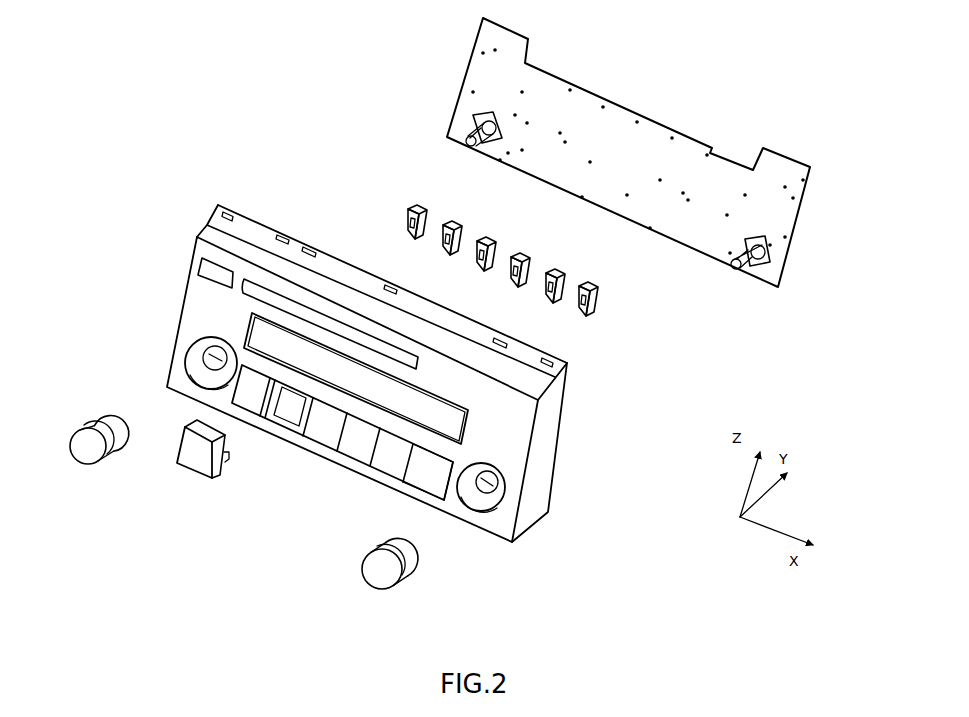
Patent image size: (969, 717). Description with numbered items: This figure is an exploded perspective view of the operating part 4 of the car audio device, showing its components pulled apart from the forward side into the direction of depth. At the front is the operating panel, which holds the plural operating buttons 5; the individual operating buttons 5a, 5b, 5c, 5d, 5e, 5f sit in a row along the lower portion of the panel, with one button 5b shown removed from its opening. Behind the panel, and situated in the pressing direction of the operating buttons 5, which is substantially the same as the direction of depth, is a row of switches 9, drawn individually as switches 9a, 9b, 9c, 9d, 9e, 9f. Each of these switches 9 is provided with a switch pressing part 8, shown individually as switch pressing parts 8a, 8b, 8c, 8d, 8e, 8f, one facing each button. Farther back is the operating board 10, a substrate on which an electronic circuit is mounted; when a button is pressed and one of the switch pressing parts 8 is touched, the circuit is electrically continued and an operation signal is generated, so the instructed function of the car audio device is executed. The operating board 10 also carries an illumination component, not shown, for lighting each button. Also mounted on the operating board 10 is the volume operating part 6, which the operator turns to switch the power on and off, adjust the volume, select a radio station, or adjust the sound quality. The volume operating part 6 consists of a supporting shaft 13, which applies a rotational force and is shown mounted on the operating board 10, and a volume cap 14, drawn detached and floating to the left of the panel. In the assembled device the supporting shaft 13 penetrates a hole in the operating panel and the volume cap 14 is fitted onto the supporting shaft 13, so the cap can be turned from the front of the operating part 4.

The operating part 4 is at (560, 585).
The operating buttons 5 is at (343, 572).
The operating button 5a is at (245, 414).
The operating button 5b is at (203, 473).
The operating button 5c is at (323, 428).
The operating button 5d is at (362, 448).
The operating button 5e is at (390, 467).
The operating button 5f is at (420, 478).
The volume operating part 6 is at (125, 323).
The switch pressing parts 8 is at (563, 347).
The switch pressing part 8a is at (408, 237).
The switch pressing part 8b is at (443, 253).
The switch pressing part 8c is at (477, 269).
The switch pressing part 8d is at (511, 285).
The switch pressing part 8e is at (547, 302).
The switch pressing part 8f is at (580, 316).
The switches 9 is at (445, 173).
The switch 9a is at (420, 210).
The switch 9b is at (456, 227).
The switch 9c is at (490, 243).
The switch 9d is at (523, 258).
The switch 9e is at (559, 274).
The switch 9f is at (593, 289).
The operating board 10 is at (785, 275).
The supporting shaft 13 is at (455, 142).
The volume cap 14 is at (101, 408).